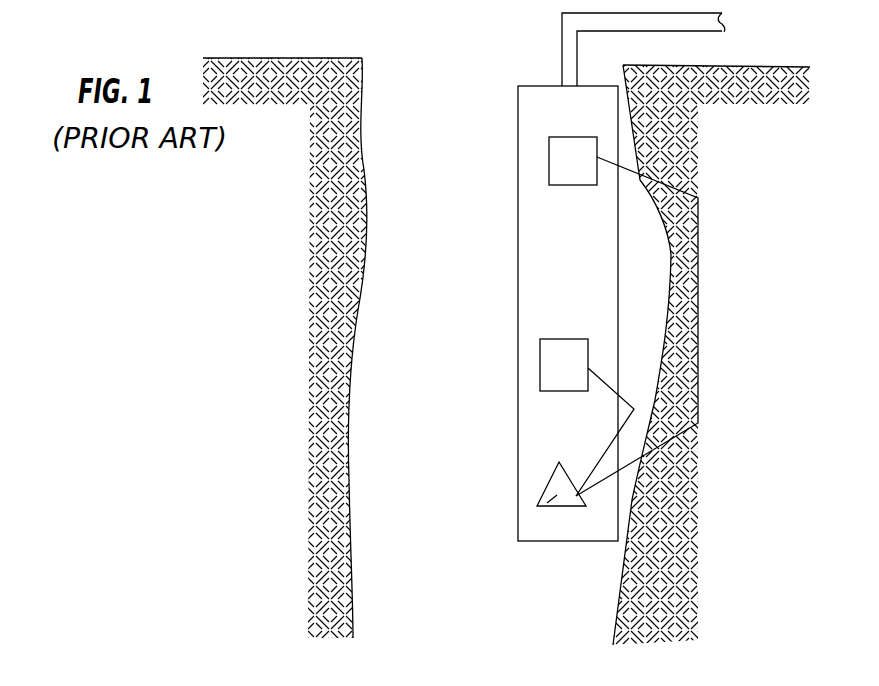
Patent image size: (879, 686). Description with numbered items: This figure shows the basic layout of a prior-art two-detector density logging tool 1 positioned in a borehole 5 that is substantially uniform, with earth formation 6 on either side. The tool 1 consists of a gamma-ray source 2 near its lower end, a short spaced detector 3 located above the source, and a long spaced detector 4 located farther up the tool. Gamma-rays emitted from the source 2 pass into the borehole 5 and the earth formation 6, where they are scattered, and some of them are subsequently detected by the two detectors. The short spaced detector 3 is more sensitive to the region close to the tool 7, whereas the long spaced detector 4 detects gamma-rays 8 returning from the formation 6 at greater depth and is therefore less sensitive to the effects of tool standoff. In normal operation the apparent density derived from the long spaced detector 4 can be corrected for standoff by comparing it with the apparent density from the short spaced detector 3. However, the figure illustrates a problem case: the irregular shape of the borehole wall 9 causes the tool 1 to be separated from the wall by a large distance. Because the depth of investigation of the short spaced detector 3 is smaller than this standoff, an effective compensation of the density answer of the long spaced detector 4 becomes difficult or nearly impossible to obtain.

The tool 1 is at (578, 527).
The gamma-ray source 2 is at (538, 507).
The short spaced (SS) detector 3 is at (560, 363).
The long spaced (LS) detector 4 is at (560, 162).
The borehole 5 is at (407, 292).
The earth formation 6 is at (763, 179).
The region close to the tool 7 is at (608, 445).
The gamma-rays 8 is at (697, 320).
The borehole wall 9 is at (670, 252).